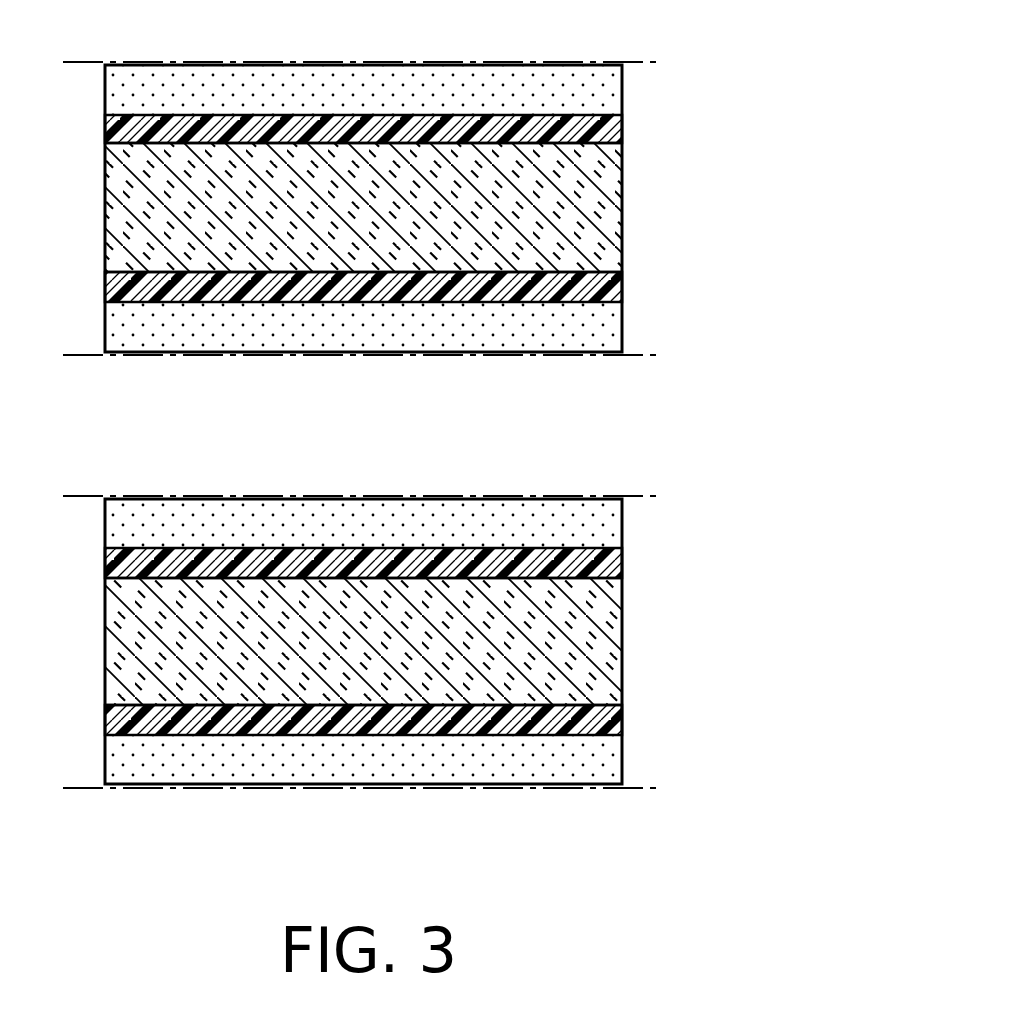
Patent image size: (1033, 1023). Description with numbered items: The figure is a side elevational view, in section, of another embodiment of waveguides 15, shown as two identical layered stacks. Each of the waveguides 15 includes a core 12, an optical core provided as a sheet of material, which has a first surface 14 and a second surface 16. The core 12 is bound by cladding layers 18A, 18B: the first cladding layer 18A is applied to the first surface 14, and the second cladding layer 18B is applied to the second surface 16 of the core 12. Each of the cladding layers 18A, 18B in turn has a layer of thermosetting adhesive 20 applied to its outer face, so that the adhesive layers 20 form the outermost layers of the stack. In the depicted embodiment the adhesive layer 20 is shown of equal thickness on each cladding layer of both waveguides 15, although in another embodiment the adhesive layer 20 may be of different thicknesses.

The optical core 12 is at (614, 207).
The first surface 14 is at (149, 143).
The waveguides 15 is at (768, 120).
The second surface 16 is at (150, 271).
The first cladding layer 18A is at (614, 129).
The second cladding layer 18B is at (614, 291).
The layer of thermosetting adhesive 20 is at (106, 87).